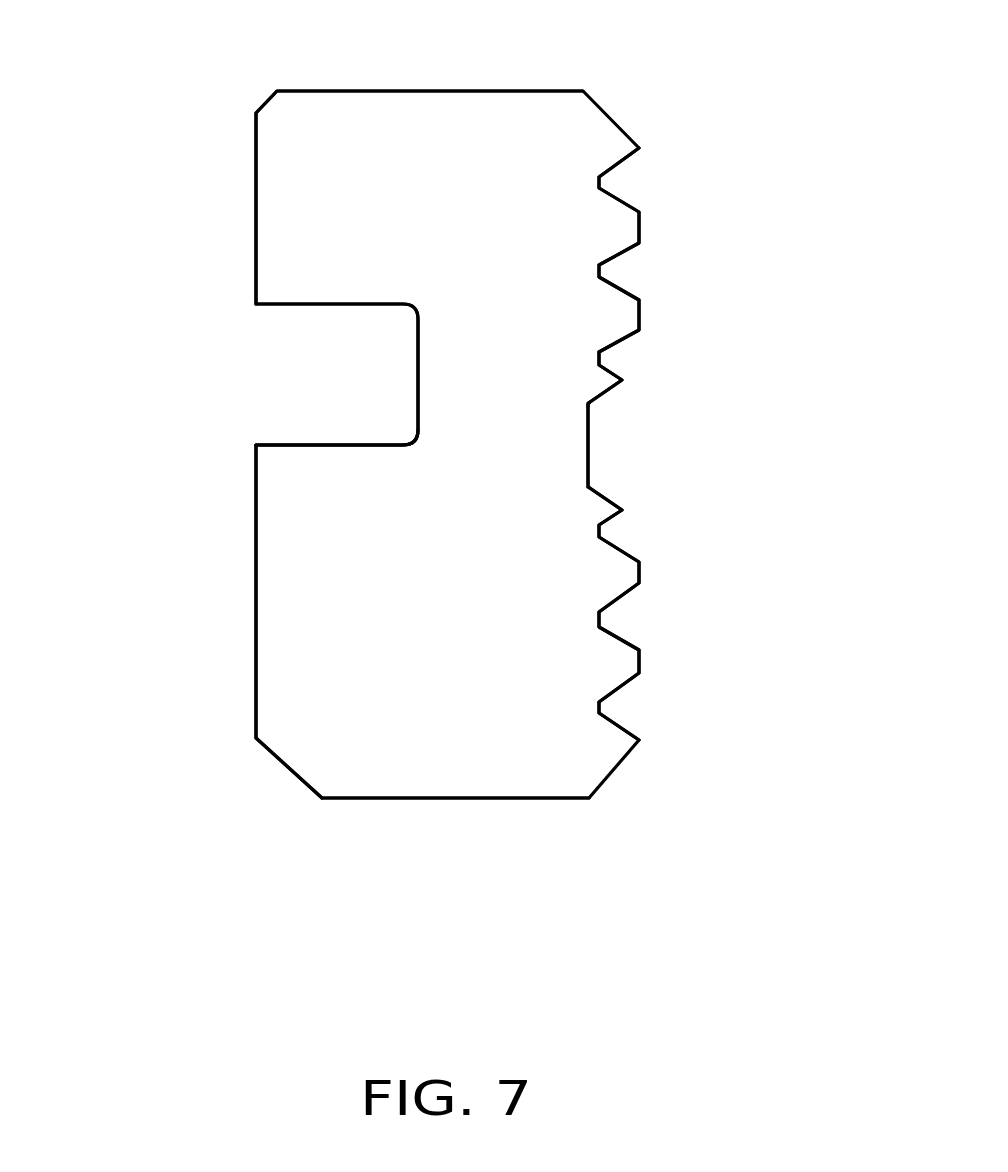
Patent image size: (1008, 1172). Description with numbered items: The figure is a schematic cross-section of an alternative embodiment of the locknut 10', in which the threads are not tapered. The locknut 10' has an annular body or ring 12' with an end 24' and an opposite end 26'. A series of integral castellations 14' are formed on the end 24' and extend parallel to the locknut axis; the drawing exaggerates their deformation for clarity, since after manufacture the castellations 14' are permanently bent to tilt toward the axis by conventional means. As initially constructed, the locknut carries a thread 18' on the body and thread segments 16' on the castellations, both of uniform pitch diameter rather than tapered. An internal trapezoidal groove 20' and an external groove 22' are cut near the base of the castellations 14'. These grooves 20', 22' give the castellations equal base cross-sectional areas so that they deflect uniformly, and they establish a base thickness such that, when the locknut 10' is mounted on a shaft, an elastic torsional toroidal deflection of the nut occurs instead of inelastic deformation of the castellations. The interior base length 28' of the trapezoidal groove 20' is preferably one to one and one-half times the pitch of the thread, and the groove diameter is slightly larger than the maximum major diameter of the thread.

The locknut 10' is at (576, 536).
The annular body or ring 12' is at (248, 651).
The castellations 14' is at (370, 161).
The thread segments 16' is at (733, 250).
The thread 18' is at (739, 613).
The trapezoidal groove 20' is at (732, 383).
The groove 22' is at (233, 374).
The end 24' is at (245, 481).
The end 26' is at (455, 864).
The interior base length 28' is at (697, 447).